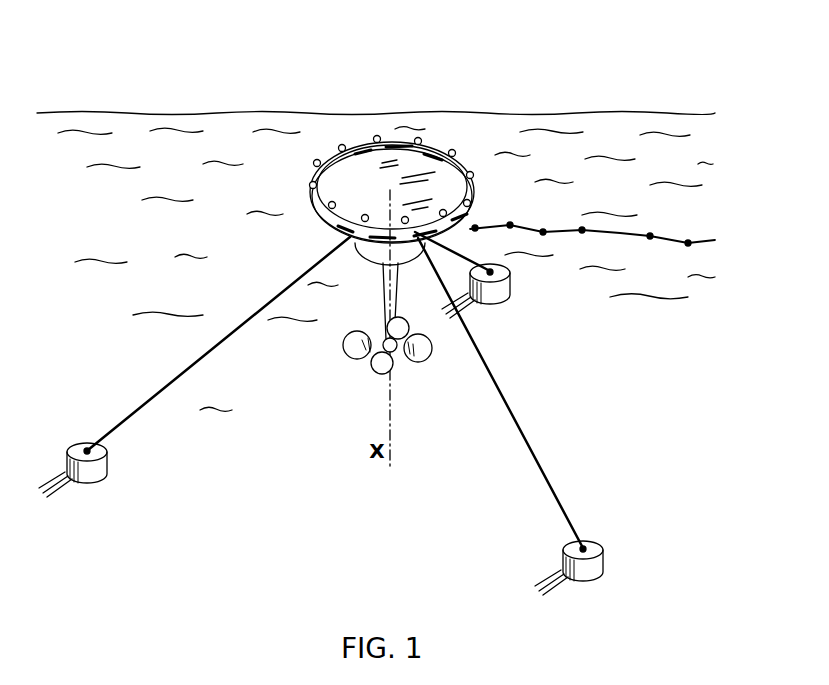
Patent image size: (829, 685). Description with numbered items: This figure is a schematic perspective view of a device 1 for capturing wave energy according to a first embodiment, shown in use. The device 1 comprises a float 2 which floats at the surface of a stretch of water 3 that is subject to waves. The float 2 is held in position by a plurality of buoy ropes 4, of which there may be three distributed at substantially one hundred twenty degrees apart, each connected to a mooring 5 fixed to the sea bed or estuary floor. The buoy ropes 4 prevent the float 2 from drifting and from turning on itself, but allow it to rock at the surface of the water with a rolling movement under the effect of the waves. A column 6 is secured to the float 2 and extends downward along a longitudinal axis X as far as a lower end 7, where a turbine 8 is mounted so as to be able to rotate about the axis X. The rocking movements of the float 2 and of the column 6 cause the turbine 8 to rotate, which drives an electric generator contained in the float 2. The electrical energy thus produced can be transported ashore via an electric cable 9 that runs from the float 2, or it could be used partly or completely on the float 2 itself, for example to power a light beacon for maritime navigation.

The device 1 is at (445, 133).
The float 2 is at (353, 183).
The stretch of water 3 is at (90, 122).
The buoy ropes 4 is at (220, 343).
The moorings 5 is at (100, 475).
The column 6 is at (408, 292).
The lower end 7 is at (380, 330).
The turbine 8 is at (398, 362).
The electric cable 9 is at (640, 218).